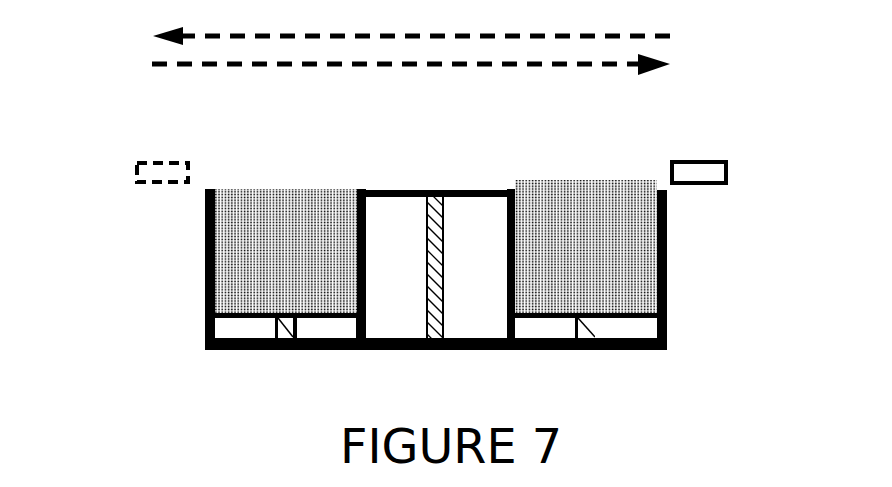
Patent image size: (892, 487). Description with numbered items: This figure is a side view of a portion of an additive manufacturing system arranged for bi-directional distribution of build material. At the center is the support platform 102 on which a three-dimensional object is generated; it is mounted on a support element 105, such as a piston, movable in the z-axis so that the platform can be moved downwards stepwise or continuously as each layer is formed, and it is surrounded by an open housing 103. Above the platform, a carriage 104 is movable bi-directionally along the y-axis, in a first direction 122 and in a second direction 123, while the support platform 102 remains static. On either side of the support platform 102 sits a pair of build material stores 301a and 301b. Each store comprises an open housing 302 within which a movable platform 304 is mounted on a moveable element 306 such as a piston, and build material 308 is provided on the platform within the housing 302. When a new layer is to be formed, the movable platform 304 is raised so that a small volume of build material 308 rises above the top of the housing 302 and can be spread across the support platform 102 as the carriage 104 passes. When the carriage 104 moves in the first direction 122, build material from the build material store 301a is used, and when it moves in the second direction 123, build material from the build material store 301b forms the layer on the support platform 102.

The support platform 102 is at (393, 190).
The open housing 103 is at (372, 348).
The carriage 104 is at (137, 182).
The support element 105 is at (427, 323).
The first direction 122 is at (548, 36).
The second direction 123 is at (350, 64).
The build material store 301a is at (693, 315).
The build material store 301b is at (192, 252).
The open housing 302 is at (665, 298).
The movable platform 304 is at (633, 313).
The moveable element 306 is at (575, 323).
The build material 308 is at (642, 260).